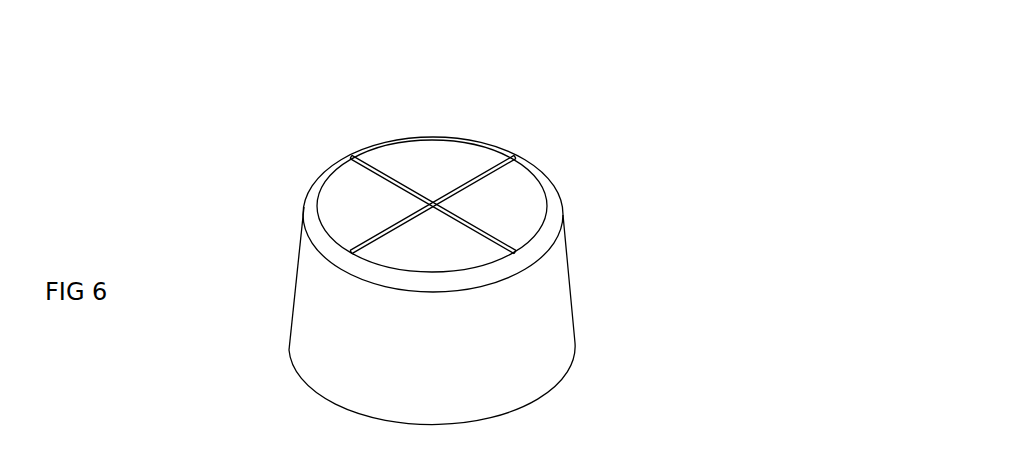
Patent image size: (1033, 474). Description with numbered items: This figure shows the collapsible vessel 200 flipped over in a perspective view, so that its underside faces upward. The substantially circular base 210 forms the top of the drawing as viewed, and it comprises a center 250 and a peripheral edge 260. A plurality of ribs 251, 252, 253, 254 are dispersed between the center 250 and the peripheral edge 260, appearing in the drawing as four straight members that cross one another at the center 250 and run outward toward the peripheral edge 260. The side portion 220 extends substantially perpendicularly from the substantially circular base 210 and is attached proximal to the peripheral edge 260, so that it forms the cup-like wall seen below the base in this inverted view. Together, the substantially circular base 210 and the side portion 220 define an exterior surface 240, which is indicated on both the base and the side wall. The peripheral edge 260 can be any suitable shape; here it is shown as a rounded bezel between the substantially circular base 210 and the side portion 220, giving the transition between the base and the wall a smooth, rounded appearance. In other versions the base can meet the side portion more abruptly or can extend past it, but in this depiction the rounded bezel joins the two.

The collapsible vessel 200 is at (213, 236).
The substantially circular base 210 is at (402, 162).
The side portion 220 is at (310, 314).
The exterior surface 240 is at (520, 223).
The center 250 is at (431, 203).
The rib 251 is at (377, 242).
The rib 252 is at (387, 178).
The rib 253 is at (500, 163).
The rib 254 is at (493, 245).
The peripheral edge 260 is at (553, 213).